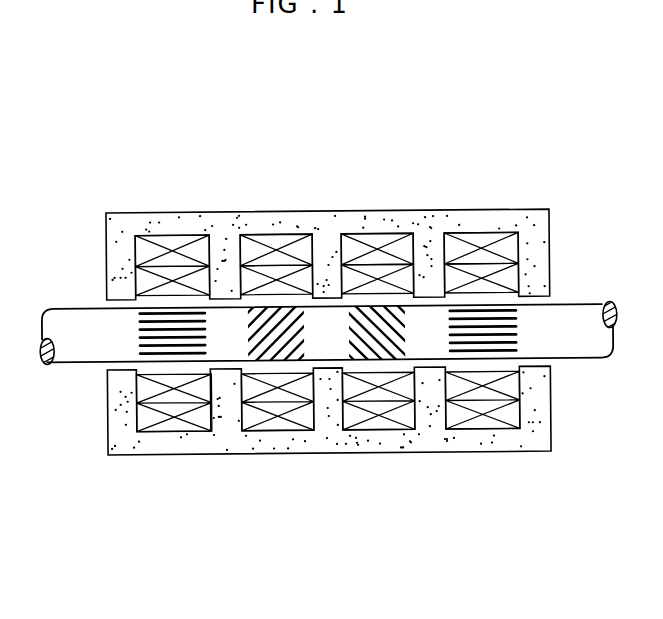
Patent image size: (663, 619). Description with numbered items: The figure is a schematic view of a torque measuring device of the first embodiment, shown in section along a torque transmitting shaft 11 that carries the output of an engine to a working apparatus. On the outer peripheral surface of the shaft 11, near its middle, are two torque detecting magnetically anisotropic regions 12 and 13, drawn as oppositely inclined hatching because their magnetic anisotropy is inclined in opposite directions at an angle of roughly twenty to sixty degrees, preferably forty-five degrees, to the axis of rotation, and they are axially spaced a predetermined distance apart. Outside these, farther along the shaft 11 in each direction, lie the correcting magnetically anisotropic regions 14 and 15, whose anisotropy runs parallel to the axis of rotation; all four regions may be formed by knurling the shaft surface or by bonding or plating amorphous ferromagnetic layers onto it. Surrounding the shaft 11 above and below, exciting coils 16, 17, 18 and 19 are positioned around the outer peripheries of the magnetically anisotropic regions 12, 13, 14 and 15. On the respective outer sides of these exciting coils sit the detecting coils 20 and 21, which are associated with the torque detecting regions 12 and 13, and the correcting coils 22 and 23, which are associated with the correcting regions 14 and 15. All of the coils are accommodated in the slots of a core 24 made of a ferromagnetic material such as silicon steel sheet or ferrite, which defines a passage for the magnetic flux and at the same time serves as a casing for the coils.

The torque transmitting shaft 11 is at (60, 318).
The torque detecting magnetically anisotropic region 12 is at (275, 338).
The torque detecting magnetically anisotropic region 13 is at (377, 338).
The correcting magnetically anisotropic region 14 is at (173, 336).
The correcting magnetically anisotropic region 15 is at (483, 339).
The exciting coil 16 is at (253, 280).
The exciting coil 17 is at (353, 267).
The exciting coil 18 is at (153, 268).
The exciting coil 19 is at (463, 257).
The detecting coil 20 is at (292, 250).
The detecting coil 21 is at (392, 240).
The correcting coil 22 is at (192, 240).
The correcting coil 23 is at (500, 250).
The core 24 is at (533, 257).